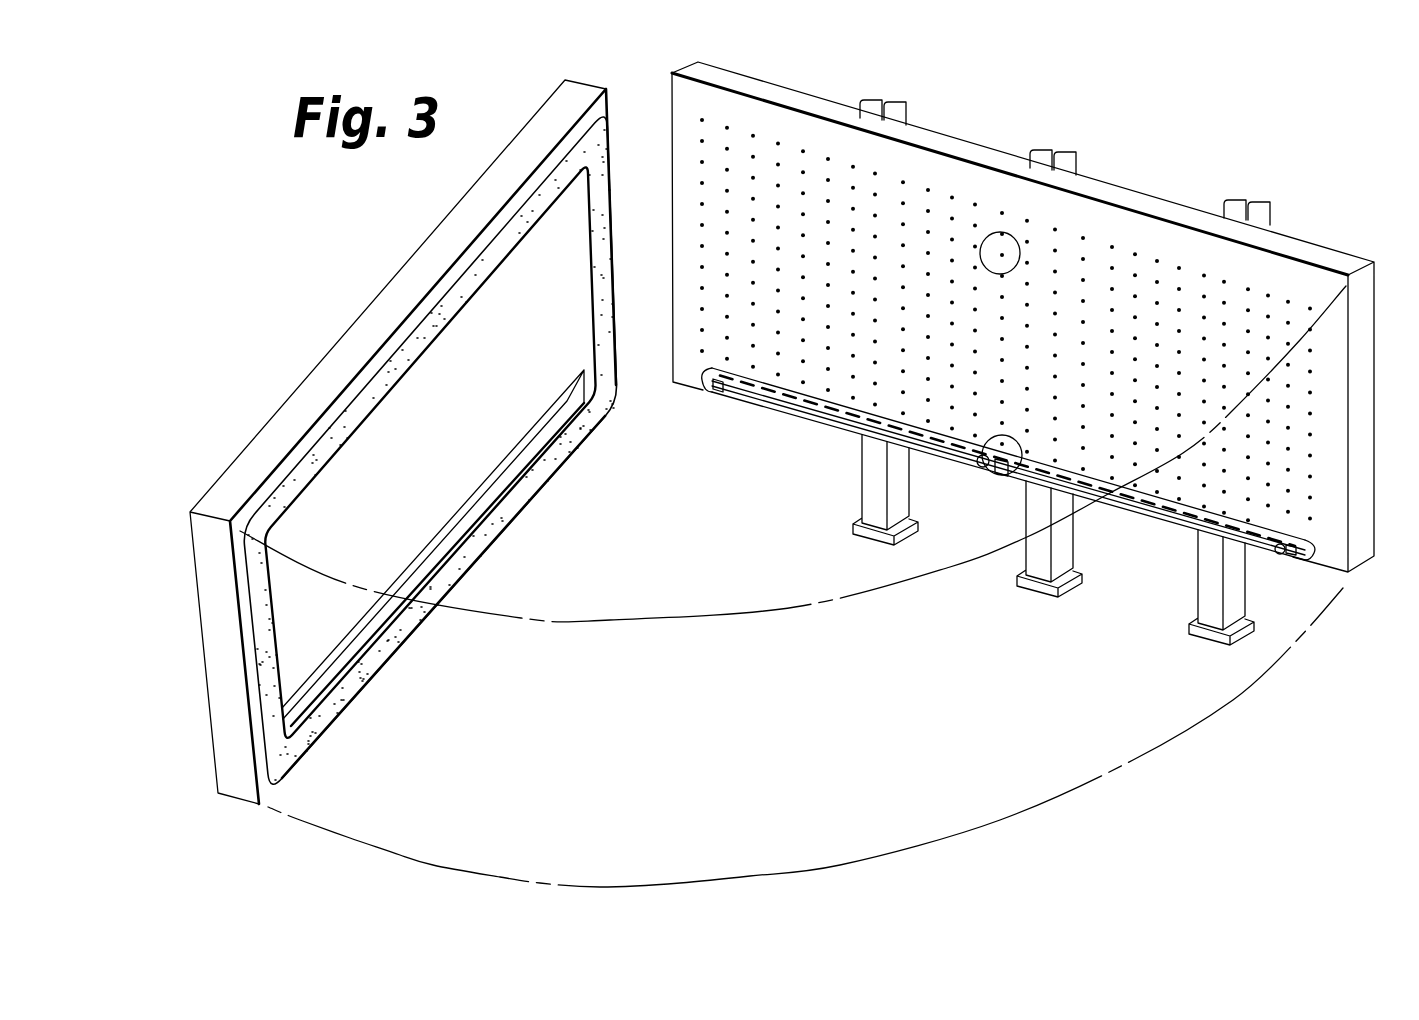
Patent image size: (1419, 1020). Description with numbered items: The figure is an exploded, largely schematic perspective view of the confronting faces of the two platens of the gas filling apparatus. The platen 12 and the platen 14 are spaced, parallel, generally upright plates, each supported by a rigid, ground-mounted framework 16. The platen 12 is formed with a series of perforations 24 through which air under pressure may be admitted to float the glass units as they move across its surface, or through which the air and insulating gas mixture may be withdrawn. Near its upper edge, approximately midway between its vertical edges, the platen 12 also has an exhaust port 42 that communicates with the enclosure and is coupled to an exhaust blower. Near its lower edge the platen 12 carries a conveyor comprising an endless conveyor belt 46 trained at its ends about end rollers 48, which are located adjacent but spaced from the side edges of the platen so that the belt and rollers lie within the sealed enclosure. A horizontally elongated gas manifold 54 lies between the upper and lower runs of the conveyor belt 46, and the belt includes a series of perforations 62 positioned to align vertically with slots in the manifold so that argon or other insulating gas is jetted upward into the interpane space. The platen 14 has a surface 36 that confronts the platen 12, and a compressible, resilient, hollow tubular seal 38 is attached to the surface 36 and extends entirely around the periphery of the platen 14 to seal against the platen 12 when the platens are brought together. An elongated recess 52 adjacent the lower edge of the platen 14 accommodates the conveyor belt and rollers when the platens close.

The platen 12 is at (968, 148).
The platen 14 is at (323, 370).
The framework 16 is at (1213, 590).
The perforations 24 is at (753, 157).
The surface 36 is at (322, 505).
The seal 38 is at (457, 297).
The exhaust port 42 is at (1020, 246).
The conveyor belt 46 is at (798, 398).
The end rollers 48 is at (703, 376).
The recess 52 is at (478, 508).
The gas manifold 54 is at (847, 418).
The perforations 62 is at (1017, 473).